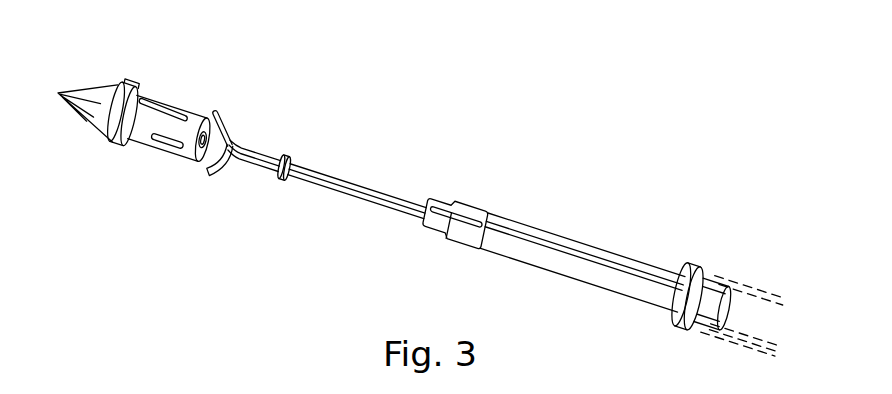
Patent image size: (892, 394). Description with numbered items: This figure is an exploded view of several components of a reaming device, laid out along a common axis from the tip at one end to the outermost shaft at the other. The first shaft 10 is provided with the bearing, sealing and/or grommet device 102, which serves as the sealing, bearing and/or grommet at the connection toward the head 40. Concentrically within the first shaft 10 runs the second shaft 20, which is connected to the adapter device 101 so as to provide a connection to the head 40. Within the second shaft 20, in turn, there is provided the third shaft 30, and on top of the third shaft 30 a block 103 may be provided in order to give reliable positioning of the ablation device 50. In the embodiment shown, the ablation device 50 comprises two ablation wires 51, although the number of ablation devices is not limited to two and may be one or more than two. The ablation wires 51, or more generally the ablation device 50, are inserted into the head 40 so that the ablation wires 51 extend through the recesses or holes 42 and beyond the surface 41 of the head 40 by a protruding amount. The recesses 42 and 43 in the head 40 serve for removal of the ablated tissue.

The first shaft 10 is at (744, 277).
The second shaft 20 is at (553, 238).
The third shaft 30 is at (376, 186).
The head 40 is at (128, 86).
The surface 41 is at (89, 136).
The recesses or holes 42 is at (96, 88).
The recesses 43 is at (140, 100).
The ablation device 50 is at (280, 155).
The ablation wires 51 is at (222, 128).
The adapter device 101 is at (463, 243).
The bearing, sealing and/or grommet device 102 is at (683, 328).
The block 103 is at (287, 157).